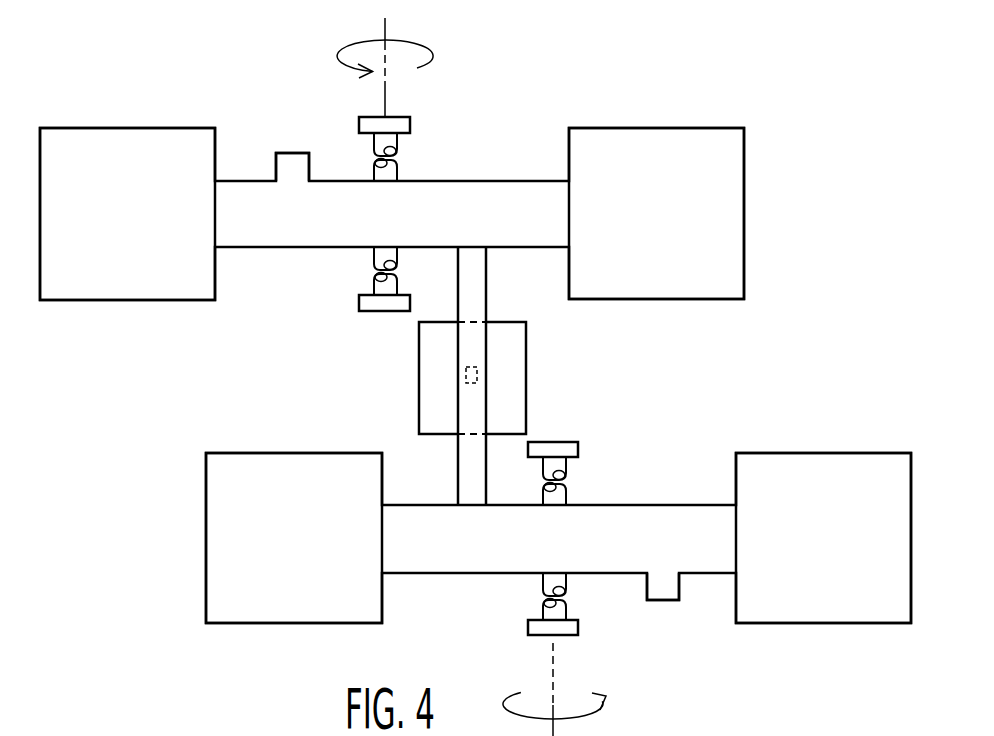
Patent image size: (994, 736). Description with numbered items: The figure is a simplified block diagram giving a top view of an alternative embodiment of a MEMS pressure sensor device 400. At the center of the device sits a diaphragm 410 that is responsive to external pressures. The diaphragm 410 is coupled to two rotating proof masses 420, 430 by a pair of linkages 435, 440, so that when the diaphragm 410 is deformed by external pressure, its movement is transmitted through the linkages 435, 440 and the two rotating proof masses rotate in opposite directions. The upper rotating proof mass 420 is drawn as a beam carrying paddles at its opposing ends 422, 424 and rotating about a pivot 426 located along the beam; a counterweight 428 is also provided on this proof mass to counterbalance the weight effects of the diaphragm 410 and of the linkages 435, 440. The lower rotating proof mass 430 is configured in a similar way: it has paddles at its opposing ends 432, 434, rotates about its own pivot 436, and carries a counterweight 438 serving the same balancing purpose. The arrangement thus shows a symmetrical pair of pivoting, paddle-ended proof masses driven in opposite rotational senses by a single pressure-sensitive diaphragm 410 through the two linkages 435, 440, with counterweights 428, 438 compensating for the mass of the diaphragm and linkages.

The MEMS pressure sensor device 400 is at (828, 87).
The diaphragm 410 is at (419, 398).
The rotating proof mass 420 is at (744, 168).
The paddle end 422 is at (657, 140).
The paddle end 424 is at (74, 140).
The pivot 426 is at (397, 170).
The counterweight 428 is at (293, 158).
The rotating proof mass 430 is at (866, 624).
The paddle end 432 is at (206, 555).
The paddle end 434 is at (825, 462).
The linkage 435 is at (477, 370).
The pivot 436 is at (566, 494).
The counterweight 438 is at (663, 600).
The linkage 440 is at (486, 288).